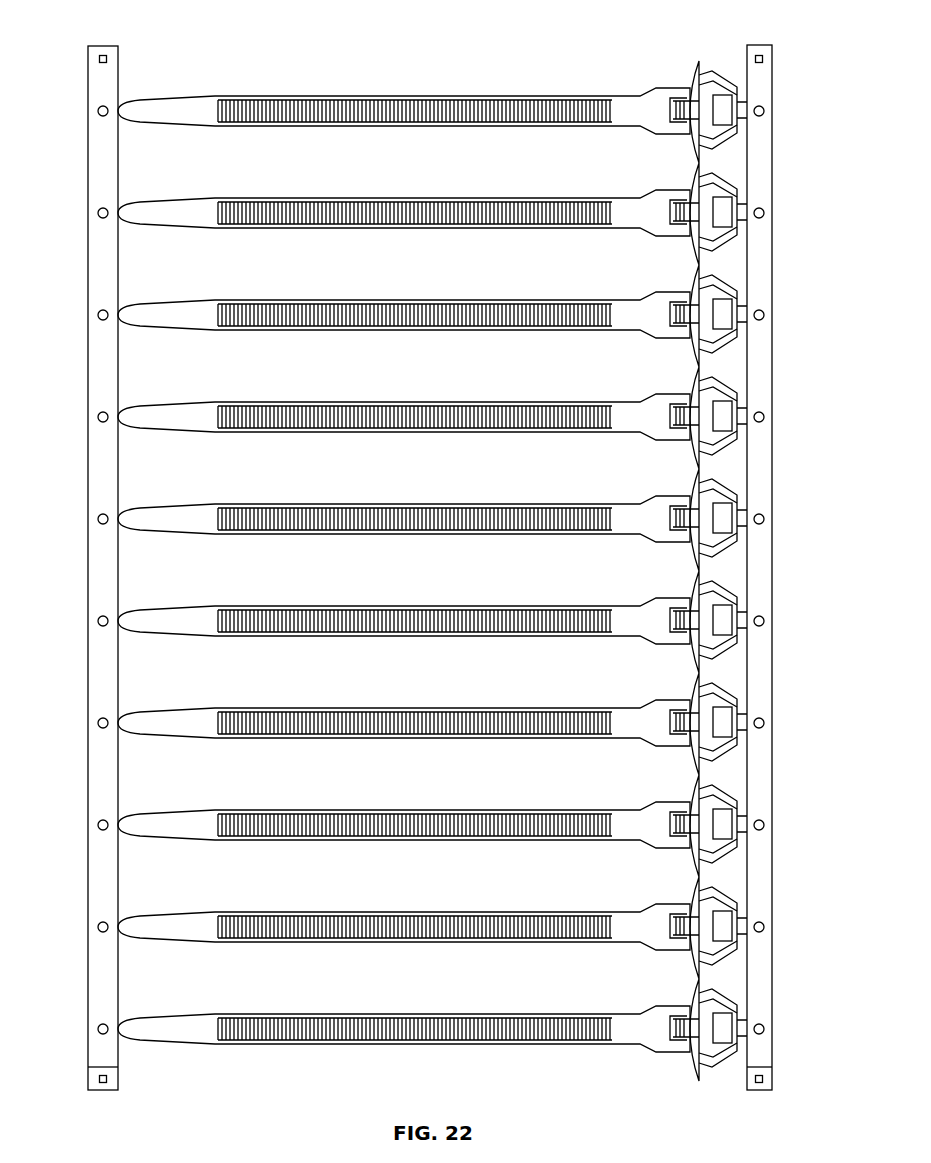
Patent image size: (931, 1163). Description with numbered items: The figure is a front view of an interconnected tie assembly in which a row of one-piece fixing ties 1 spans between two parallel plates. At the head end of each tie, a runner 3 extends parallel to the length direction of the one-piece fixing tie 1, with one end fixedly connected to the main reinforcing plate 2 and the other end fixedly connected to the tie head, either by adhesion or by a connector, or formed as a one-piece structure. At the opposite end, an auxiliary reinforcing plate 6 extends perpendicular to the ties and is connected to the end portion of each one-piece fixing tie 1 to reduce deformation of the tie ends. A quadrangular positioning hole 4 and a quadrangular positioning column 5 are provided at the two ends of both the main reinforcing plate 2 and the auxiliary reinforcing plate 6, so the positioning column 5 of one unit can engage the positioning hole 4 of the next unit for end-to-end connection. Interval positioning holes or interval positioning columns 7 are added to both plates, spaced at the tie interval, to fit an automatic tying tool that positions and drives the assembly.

The one-piece fixing tie 1 is at (521, 98).
The main reinforcing plate 2 is at (762, 90).
The runner 3 is at (745, 210).
The positioning hole 4 is at (106, 57).
The positioning column 5 is at (100, 1077).
The auxiliary reinforcing plate 6 is at (103, 283).
The interval positioning hole or interval positioning column 7 is at (100, 412).